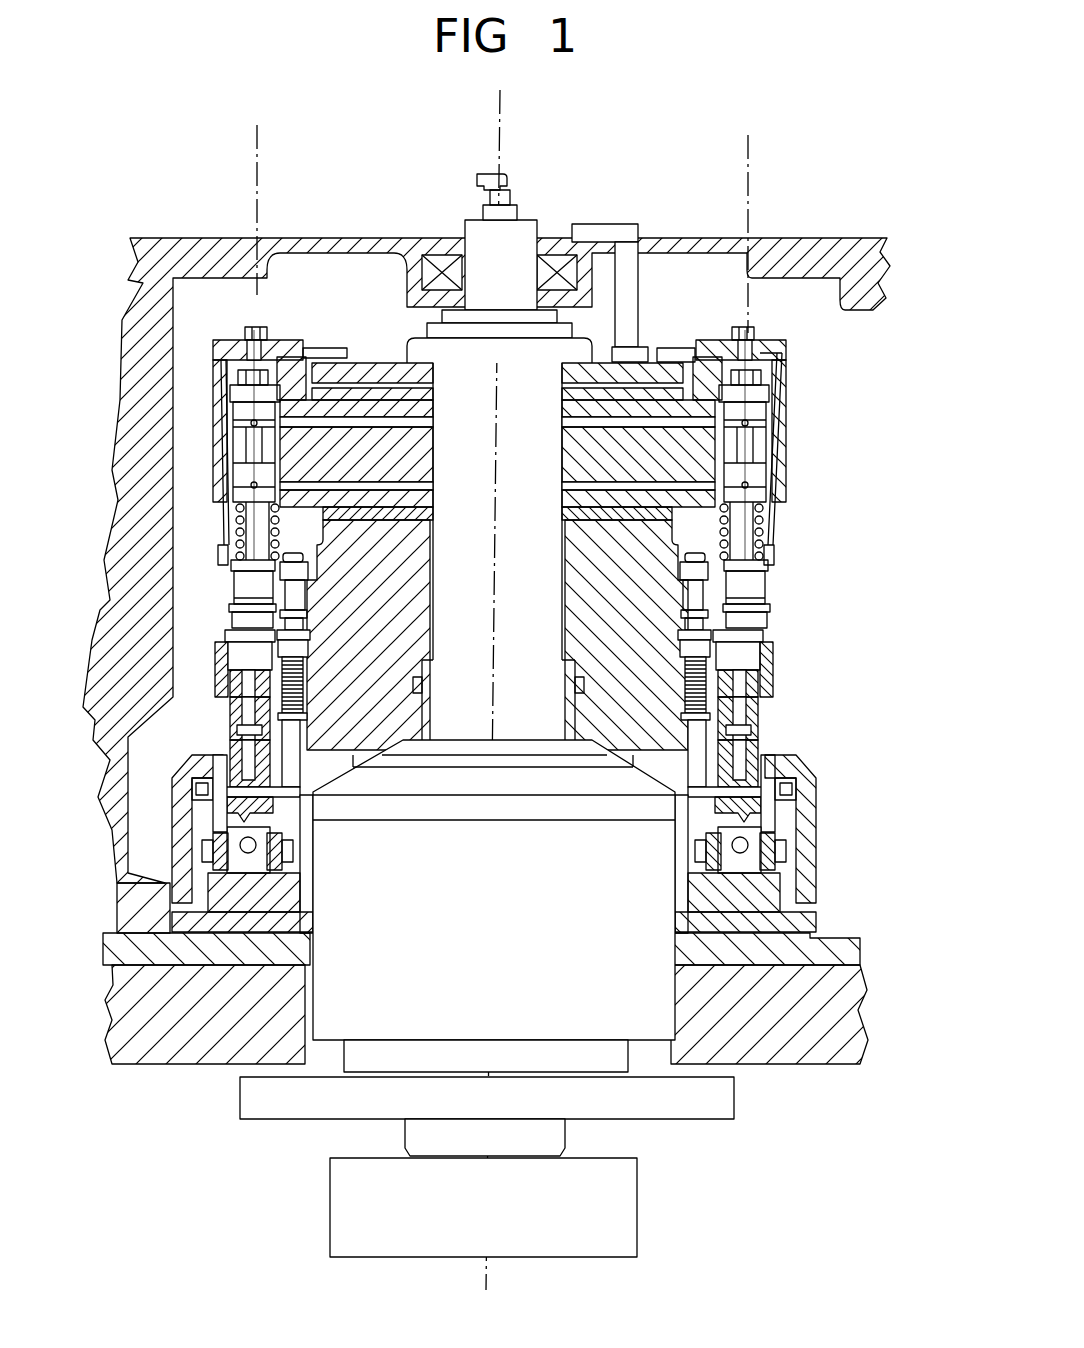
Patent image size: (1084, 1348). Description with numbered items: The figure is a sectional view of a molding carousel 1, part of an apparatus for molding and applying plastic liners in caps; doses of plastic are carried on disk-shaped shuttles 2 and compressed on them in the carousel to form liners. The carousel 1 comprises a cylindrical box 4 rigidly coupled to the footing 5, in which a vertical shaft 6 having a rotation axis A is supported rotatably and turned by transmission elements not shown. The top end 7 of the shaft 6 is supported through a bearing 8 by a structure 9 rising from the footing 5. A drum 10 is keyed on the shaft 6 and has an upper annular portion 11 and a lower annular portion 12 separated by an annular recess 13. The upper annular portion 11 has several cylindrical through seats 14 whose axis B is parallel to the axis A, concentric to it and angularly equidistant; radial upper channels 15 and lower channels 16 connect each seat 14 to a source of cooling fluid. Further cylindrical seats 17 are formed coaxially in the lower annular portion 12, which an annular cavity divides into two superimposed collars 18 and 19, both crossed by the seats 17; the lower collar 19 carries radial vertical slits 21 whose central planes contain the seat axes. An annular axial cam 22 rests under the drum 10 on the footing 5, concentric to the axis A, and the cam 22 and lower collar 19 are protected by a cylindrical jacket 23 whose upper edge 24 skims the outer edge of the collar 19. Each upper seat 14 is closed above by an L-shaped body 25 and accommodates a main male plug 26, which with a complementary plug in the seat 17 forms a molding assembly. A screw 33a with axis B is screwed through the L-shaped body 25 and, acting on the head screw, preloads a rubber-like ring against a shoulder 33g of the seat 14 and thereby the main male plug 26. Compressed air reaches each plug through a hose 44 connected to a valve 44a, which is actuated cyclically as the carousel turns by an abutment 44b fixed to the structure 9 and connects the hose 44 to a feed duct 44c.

The carousel 1 is at (471, 690).
The shuttle 2 is at (220, 610).
The cylindrical box 4 is at (410, 990).
The footing 5 is at (822, 1065).
The vertical shaft 6 is at (479, 435).
The top end 7 is at (523, 250).
The bearing 8 is at (440, 256).
The structure 9 is at (806, 256).
The drum 10 is at (652, 553).
The upper annular portion 11 is at (773, 467).
The lower annular portion 12 is at (762, 676).
The annular recess 13 is at (768, 560).
The cylindrical through seat 14 is at (760, 440).
The upper channel 15 is at (398, 430).
The lower channel 16 is at (426, 494).
The cylindrical seat 17 is at (780, 683).
The upper collar 18 is at (770, 702).
The lower collar 19 is at (205, 815).
The vertical slit 21 is at (770, 790).
The annular axial cam 22 is at (218, 898).
The cylindrical jacket 23 is at (183, 858).
The upper edge 24 is at (204, 776).
The L-shaped body 25 is at (756, 347).
The main male plug 26 is at (768, 590).
The screw 33a is at (244, 326).
The shoulder 33g is at (212, 412).
The hose 44 is at (778, 517).
The valve 44a is at (678, 350).
The abutment 44b is at (640, 350).
The duct 44c is at (378, 387).
The axis A is at (500, 114).
The axis B is at (749, 158).